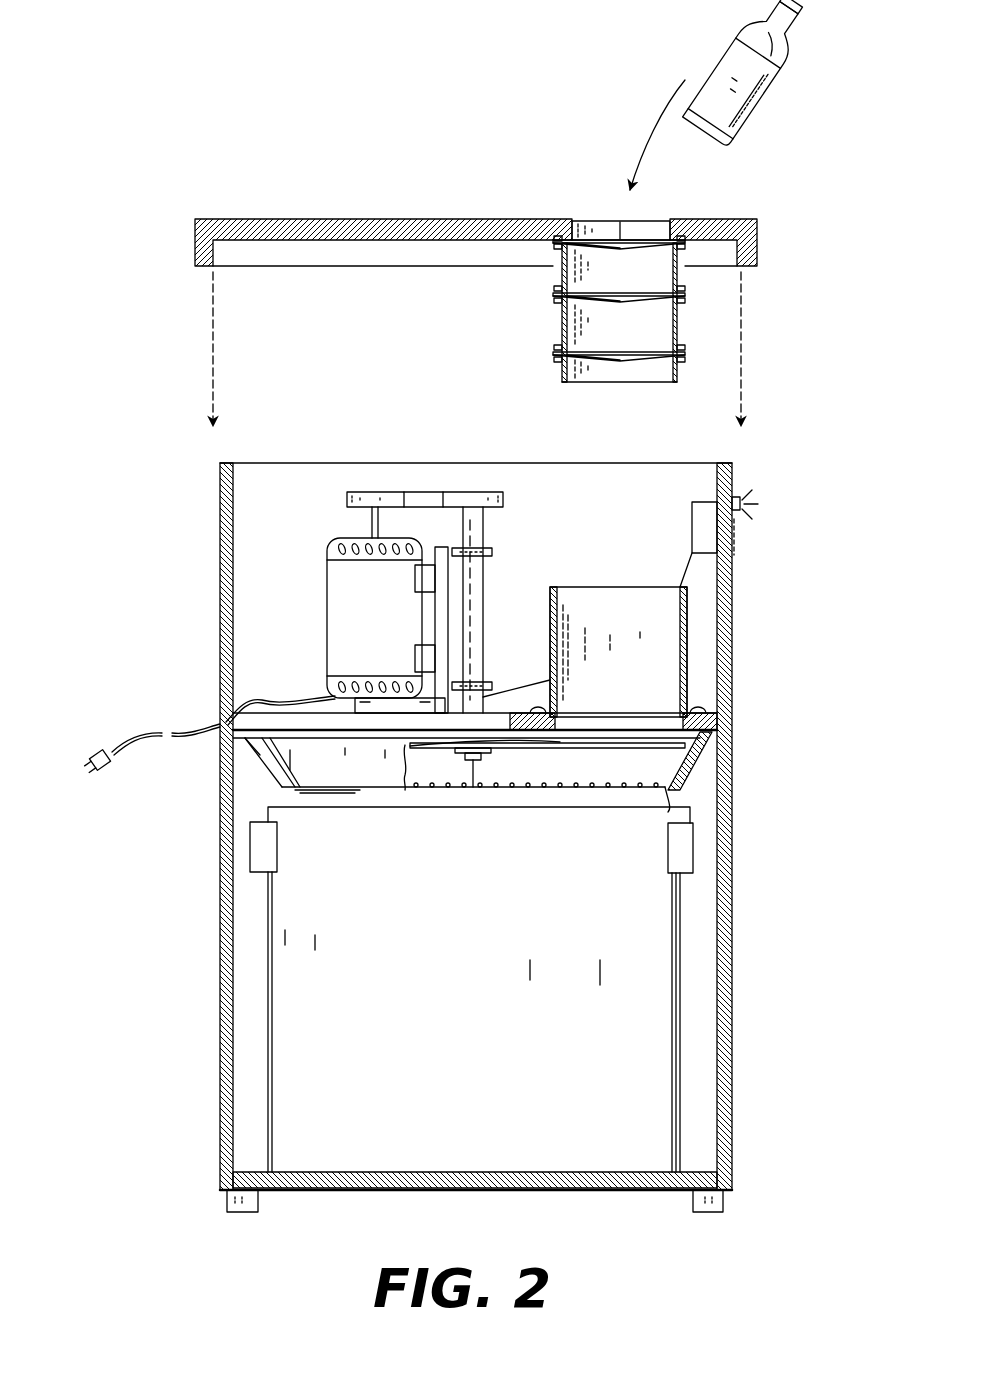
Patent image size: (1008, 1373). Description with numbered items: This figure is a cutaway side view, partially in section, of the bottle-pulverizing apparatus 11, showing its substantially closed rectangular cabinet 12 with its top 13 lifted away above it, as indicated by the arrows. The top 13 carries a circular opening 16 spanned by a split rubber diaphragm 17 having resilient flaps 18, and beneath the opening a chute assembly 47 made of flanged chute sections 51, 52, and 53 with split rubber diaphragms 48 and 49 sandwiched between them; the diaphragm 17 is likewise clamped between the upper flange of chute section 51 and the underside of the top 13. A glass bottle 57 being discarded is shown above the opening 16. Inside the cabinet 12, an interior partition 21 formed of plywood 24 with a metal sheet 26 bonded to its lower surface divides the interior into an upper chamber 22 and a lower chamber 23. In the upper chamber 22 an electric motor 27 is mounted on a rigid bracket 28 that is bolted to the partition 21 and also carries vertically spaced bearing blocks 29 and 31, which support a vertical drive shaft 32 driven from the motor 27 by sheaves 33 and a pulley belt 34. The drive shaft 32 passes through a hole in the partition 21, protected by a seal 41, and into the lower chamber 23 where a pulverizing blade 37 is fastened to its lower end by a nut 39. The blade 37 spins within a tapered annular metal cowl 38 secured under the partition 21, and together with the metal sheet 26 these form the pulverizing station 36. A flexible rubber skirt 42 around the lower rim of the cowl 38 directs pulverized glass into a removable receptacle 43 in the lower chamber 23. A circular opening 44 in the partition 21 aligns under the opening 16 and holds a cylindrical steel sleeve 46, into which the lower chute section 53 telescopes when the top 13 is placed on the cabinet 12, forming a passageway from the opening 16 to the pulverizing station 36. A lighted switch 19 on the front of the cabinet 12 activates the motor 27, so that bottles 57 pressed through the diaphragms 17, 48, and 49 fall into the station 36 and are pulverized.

The apparatus 11 is at (134, 57).
The cabinet 12 is at (439, 837).
The top 13 is at (318, 217).
The circular opening 16 is at (651, 225).
The split rubber diaphragm 17 is at (630, 222).
The resilient flaps 18 is at (615, 239).
The switch 19 is at (758, 538).
The interior partition 21 is at (475, 689).
The upper chamber 22 is at (238, 586).
The lower chamber 23 is at (250, 1092).
The plywood 24 is at (262, 700).
The metal sheet 26 is at (268, 752).
The electric motor 27 is at (330, 588).
The rigid bracket 28 is at (440, 623).
The bearing block 29 is at (504, 610).
The bearing block 31 is at (483, 691).
The drive shaft 32 is at (483, 588).
The sheaves 33 is at (375, 490).
The pulley belt 34 is at (422, 490).
The pulverizing station 36 is at (532, 789).
The pulverizing blade 37 is at (635, 750).
The tapered metal cowl 38 is at (290, 770).
The nut 39 is at (473, 787).
The seal 41 is at (503, 747).
The flexible rubber skirt 42 is at (370, 800).
The receptacle 43 is at (650, 1080).
The circular opening 44 is at (614, 716).
The cylindrical steel sleeve 46 is at (687, 652).
The chute assembly 47 is at (658, 331).
The split rubber diaphragm 48 is at (556, 294).
The split rubber diaphragm 49 is at (556, 353).
The chute section 51 is at (677, 277).
The chute section 52 is at (677, 323).
The chute section 53 is at (677, 368).
The glass bottle 57 is at (782, 98).